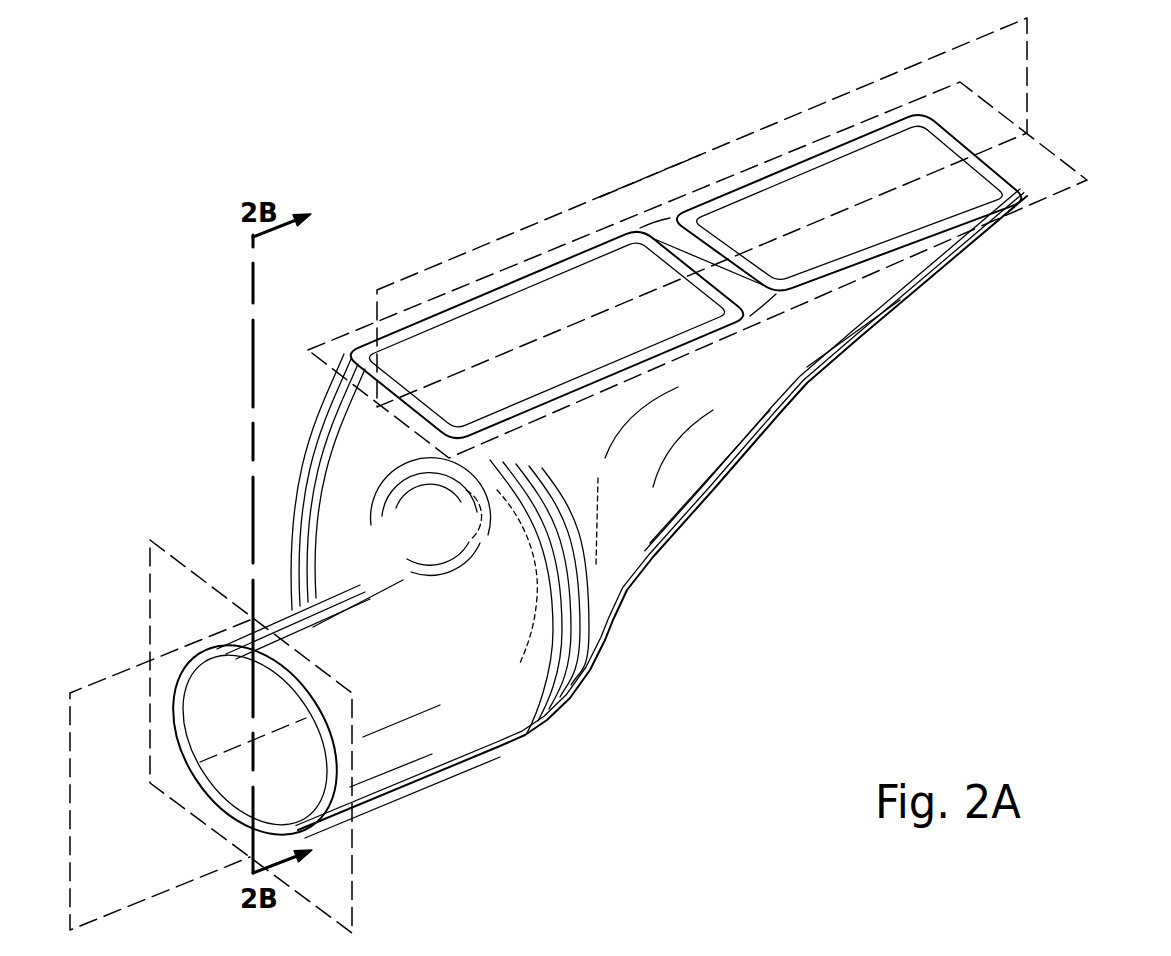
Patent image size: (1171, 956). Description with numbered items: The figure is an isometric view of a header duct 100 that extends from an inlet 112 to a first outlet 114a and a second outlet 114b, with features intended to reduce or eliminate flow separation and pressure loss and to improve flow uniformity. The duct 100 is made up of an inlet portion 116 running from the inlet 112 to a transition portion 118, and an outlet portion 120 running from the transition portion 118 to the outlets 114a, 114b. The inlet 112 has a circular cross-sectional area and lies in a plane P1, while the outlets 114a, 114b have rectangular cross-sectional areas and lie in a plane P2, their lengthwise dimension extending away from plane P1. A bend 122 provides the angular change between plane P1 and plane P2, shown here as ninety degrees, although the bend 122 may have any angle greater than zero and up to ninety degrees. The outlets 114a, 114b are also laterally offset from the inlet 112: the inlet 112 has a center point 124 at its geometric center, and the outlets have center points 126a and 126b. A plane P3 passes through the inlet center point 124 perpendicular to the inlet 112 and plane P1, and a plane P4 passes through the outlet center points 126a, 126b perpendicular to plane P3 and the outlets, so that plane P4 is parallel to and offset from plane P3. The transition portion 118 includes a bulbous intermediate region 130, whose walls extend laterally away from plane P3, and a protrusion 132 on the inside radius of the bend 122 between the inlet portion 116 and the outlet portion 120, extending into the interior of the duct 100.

The header duct 100 is at (559, 473).
The inlet 112 is at (180, 626).
The first outlet 114a is at (547, 305).
The second outlet 114b is at (849, 185).
The inlet portion 116 is at (411, 786).
The transition portion 118 is at (610, 686).
The outlet portion 120 is at (628, 153).
The bend 122 is at (340, 560).
The inlet center point 124 is at (256, 739).
The first outlet center point 126a is at (556, 329).
The second outlet center point 126b is at (851, 206).
The bulbous intermediate region 130 is at (571, 639).
The protrusion 132 is at (462, 534).
The plane P1 is at (168, 538).
The plane P2 is at (1068, 165).
The plane P3 is at (80, 688).
The plane P4 is at (1027, 60).